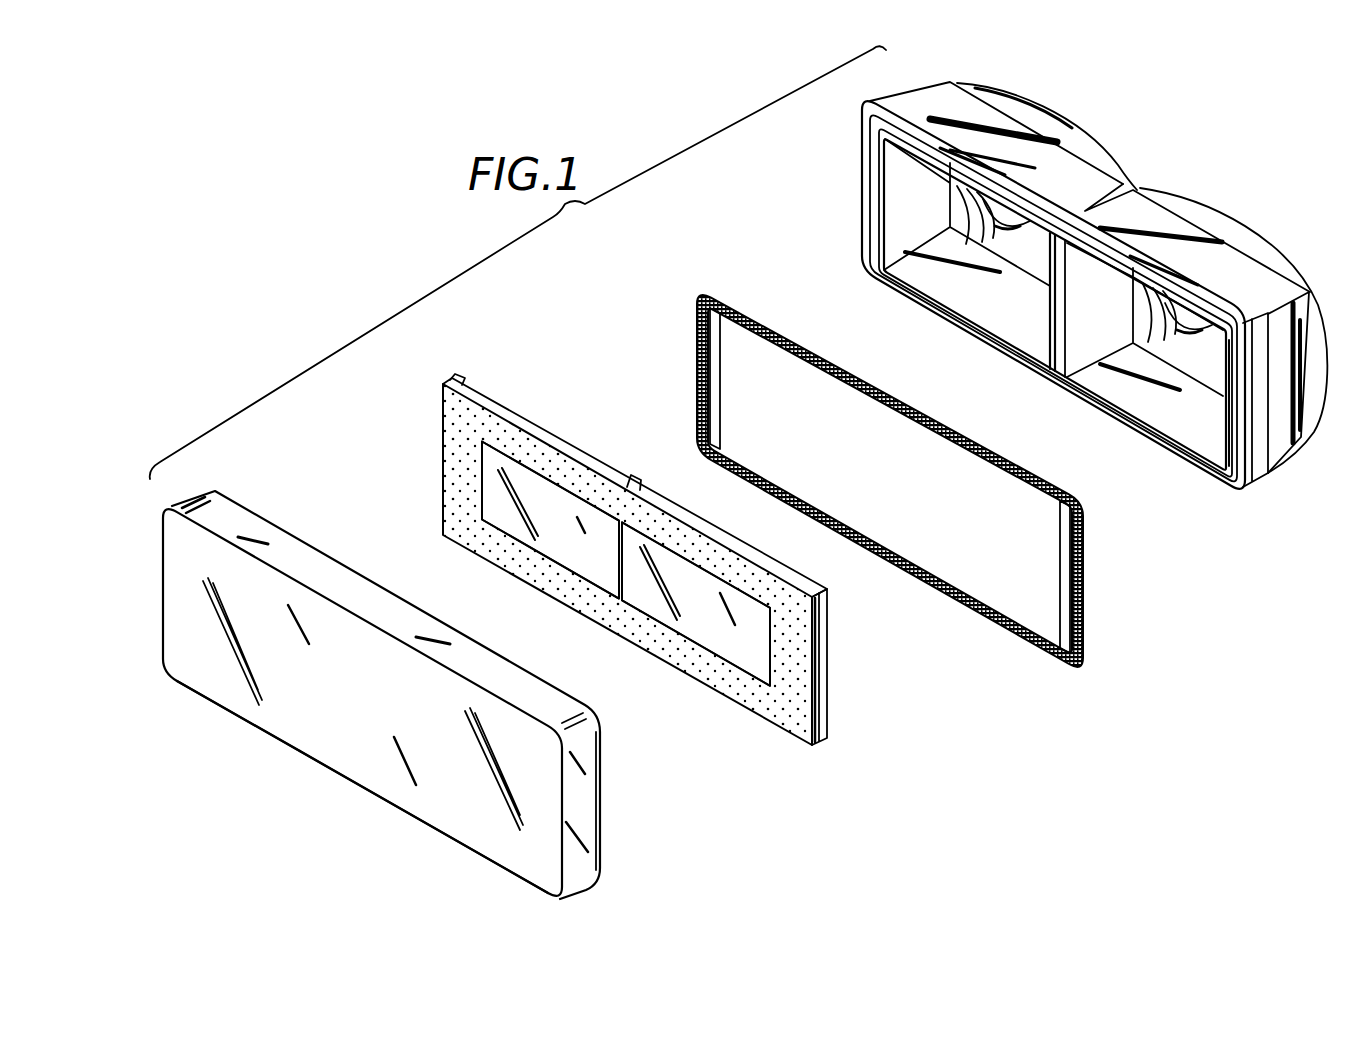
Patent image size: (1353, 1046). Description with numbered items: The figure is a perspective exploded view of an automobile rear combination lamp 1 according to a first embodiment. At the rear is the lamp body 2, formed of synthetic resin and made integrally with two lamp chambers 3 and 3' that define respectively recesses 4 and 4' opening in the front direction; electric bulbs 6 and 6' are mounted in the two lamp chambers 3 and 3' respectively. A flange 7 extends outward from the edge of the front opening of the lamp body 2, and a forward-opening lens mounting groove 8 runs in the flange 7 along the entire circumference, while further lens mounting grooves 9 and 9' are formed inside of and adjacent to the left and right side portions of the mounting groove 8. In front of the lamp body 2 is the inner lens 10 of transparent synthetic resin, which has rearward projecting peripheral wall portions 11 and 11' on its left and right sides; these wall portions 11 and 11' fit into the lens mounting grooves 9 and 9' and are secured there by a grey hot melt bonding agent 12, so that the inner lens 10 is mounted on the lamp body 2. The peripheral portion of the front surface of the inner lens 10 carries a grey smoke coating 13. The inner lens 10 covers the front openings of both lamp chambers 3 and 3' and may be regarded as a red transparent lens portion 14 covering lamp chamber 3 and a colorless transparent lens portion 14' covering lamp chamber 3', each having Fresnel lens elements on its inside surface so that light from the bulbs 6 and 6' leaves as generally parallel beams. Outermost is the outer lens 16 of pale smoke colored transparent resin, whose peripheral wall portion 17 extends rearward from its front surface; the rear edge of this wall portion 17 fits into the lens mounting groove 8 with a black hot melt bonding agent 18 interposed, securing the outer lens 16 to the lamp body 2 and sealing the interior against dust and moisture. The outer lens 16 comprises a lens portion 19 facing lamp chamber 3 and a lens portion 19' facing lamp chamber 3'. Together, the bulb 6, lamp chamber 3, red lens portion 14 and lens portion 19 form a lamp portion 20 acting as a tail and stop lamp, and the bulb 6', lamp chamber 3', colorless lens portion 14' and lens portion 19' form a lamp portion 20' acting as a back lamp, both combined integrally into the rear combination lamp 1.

The rear combination lamp 1 is at (1066, 354).
The lamp body 2 is at (1066, 308).
The lamp chamber 3 is at (928, 212).
The lamp chamber 3' is at (1145, 377).
The recess 4 is at (952, 215).
The recess 4' is at (1149, 341).
The electric bulb 6 is at (1010, 234).
The electric bulb 6' is at (1190, 338).
The flange 7 is at (1268, 470).
The lens mounting groove 8 is at (866, 158).
The lens mounting groove 9 is at (1018, 302).
The lens mounting groove 9' is at (1211, 437).
The inner lens 10 is at (641, 531).
The peripheral wall portion 11 is at (439, 351).
The peripheral wall portion 11' is at (860, 667).
The hot melt bonding agent 12 is at (721, 409).
The smoke coating 13 is at (446, 463).
The lens portion 14 is at (550, 497).
The lens portion 14' is at (696, 626).
The outer lens 16 is at (381, 693).
The peripheral wall portion 17 is at (600, 752).
The hot melt bonding agent 18 is at (927, 481).
The lens portion 19 is at (267, 596).
The lens portion 19' is at (461, 715).
The lamp portion 20 is at (232, 738).
The lamp portion 20' is at (424, 825).